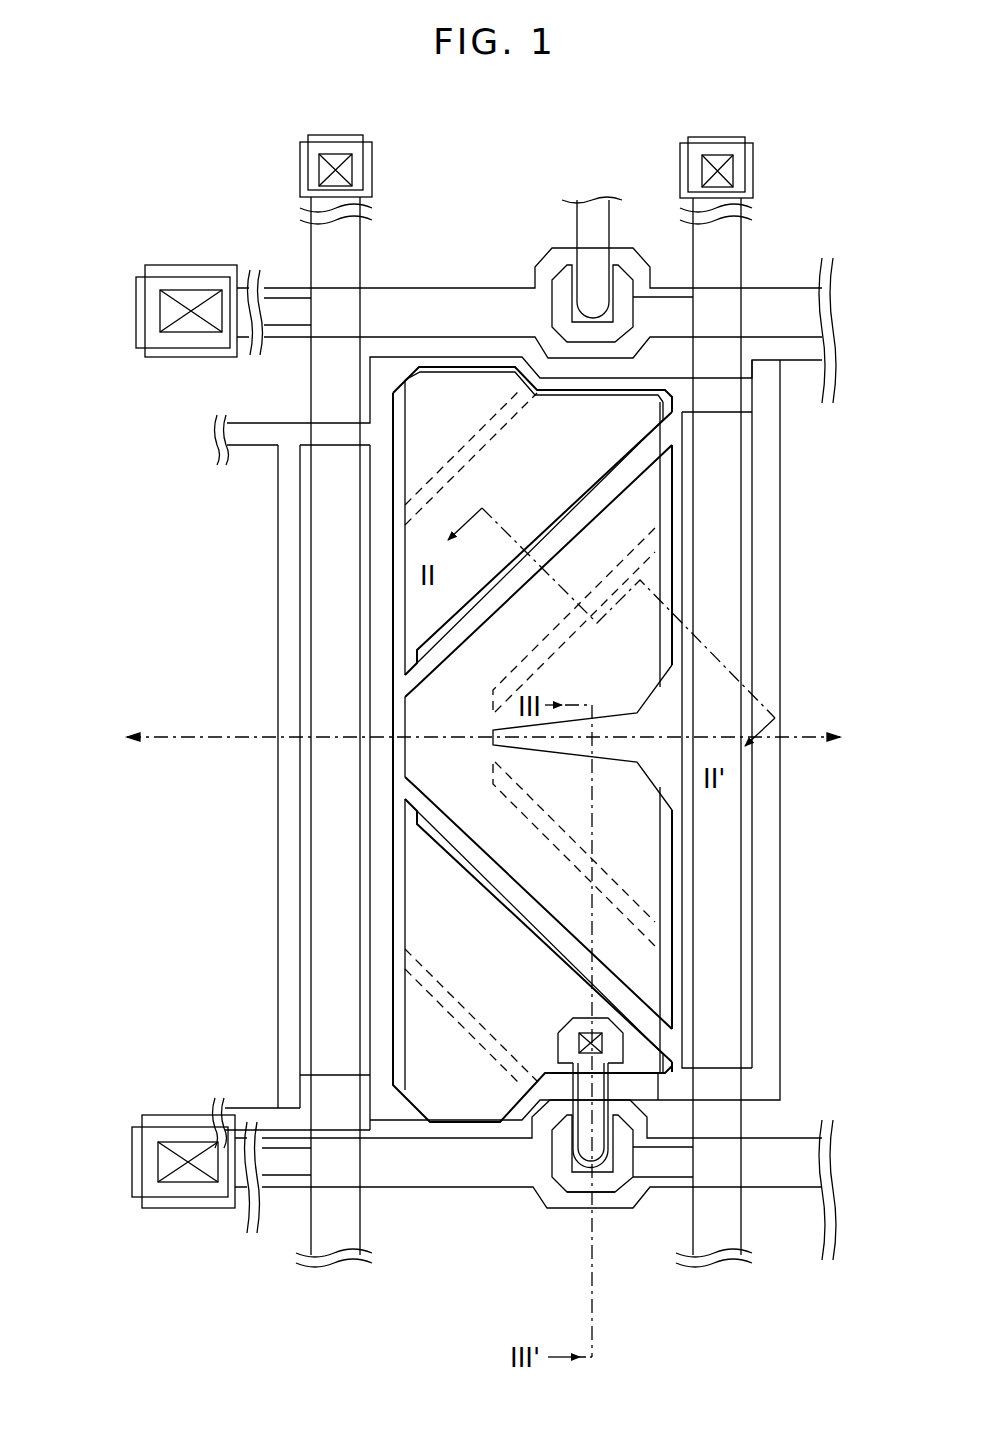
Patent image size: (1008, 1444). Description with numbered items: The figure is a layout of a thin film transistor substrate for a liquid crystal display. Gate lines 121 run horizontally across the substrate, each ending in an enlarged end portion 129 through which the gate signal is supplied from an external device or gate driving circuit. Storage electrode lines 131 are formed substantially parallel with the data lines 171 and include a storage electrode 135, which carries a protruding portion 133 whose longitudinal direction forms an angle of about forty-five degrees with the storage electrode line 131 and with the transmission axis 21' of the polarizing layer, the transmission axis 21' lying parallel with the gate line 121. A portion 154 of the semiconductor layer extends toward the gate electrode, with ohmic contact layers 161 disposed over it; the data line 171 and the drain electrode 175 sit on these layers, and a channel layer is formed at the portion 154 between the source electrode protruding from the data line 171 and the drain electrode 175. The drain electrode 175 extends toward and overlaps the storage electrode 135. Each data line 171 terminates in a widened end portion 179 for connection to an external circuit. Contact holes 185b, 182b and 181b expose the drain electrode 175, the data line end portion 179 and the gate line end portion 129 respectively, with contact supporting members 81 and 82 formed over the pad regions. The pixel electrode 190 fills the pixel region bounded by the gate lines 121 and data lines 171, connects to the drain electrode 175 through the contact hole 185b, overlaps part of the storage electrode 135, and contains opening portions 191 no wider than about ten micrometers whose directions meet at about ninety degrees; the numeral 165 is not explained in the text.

The gate line 121 is at (282, 340).
The end portion of the gate line 129 is at (165, 360).
The storage electrode line 131 is at (278, 524).
The protruding portion 133 is at (540, 550).
The storage electrode 135 is at (400, 577).
The portion of the semiconductor layer 154 is at (570, 1157).
The ohmic contact layer 161 is at (578, 1185).
The ohmic contact island 165 is at (585, 1132).
The data line 171 is at (322, 1108).
The drain electrode 175 is at (585, 1132).
The end portion of the data line 179 is at (300, 180).
The contact hole 181b is at (176, 300).
The contact hole 182b is at (337, 156).
The contact hole 185b is at (602, 1043).
The pixel electrode 190 is at (660, 795).
The opening portion 191 is at (625, 990).
The contact supporting member 81 is at (197, 1208).
The contact supporting member 82 is at (372, 174).
The transmission axis 21' is at (483, 705).